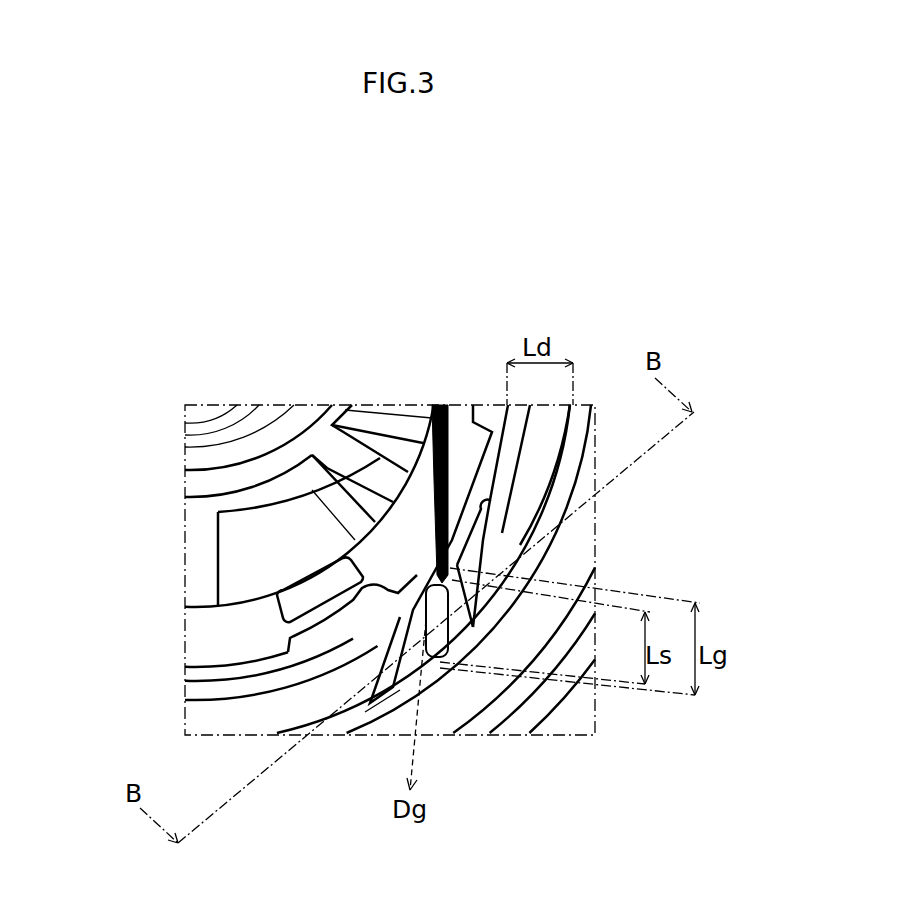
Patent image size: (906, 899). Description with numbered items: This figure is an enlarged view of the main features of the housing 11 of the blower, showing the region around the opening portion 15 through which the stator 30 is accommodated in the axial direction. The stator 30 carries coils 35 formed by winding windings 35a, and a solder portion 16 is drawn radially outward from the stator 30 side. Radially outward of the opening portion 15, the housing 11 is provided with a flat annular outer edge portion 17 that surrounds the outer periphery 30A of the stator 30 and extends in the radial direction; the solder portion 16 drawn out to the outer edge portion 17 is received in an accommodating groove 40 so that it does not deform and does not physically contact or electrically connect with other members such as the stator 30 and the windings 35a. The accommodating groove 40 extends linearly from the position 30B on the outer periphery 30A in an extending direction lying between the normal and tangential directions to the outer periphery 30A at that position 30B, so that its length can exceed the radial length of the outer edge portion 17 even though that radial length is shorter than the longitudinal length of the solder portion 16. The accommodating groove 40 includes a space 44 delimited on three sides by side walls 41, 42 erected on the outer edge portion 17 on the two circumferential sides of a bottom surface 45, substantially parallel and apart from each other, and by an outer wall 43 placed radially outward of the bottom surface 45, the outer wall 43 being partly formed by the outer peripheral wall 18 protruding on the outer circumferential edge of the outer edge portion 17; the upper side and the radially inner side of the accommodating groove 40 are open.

The blower housing 11 is at (182, 380).
The opening portion 15 is at (183, 680).
The solder portion 16 is at (447, 640).
The outer edge portion 17 is at (560, 428).
The outer peripheral wall 18 is at (584, 456).
The stator 30 is at (196, 625).
The outer periphery 30A is at (226, 681).
The position 30B is at (440, 556).
The coil 35 is at (349, 477).
The winding 35a is at (447, 407).
The accommodating groove 40 is at (493, 540).
The side wall 41 is at (375, 690).
The side wall 42 is at (480, 562).
The outer wall 43 is at (430, 662).
The space 44 is at (395, 634).
The bottom surface 45 is at (392, 692).